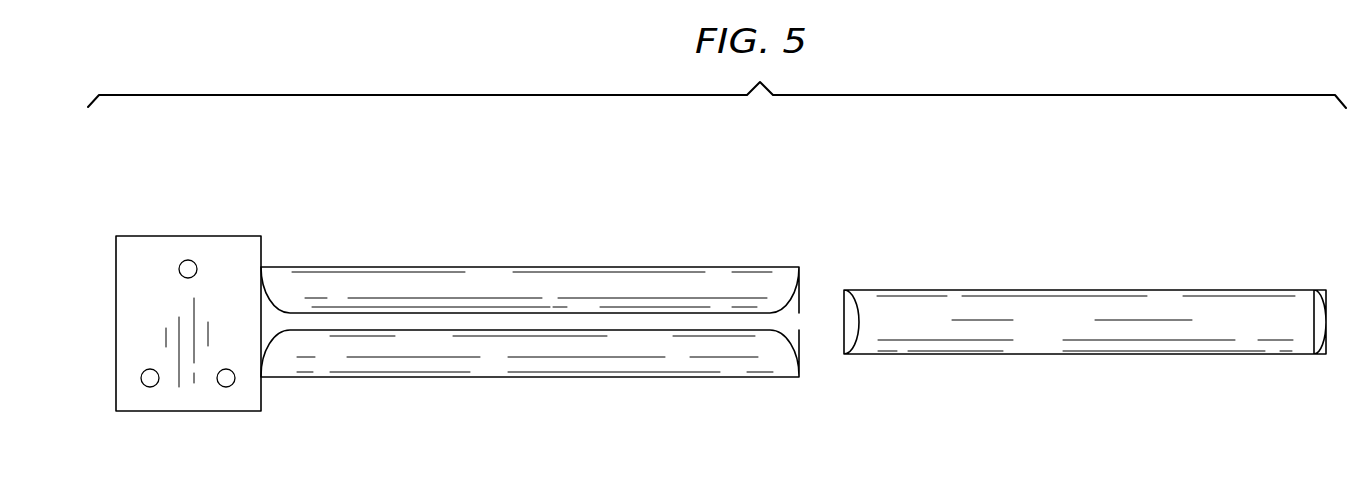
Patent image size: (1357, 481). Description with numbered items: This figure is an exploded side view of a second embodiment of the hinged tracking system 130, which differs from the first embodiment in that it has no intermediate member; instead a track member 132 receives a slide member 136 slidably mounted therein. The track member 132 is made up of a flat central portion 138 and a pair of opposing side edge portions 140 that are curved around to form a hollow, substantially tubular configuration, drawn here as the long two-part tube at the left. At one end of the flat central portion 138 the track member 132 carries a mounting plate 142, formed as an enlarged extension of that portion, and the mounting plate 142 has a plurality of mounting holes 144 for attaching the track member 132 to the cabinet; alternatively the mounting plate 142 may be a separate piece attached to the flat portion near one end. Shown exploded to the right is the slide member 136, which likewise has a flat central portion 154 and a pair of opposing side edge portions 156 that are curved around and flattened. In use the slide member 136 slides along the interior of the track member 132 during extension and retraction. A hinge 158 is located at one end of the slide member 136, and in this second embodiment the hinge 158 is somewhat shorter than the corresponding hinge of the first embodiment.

The hinged tracking system 130 is at (841, 258).
The track member 132 is at (487, 293).
The slide member 136 is at (1172, 307).
The flat central portion 138 is at (495, 320).
The side edge portions 140 is at (357, 265).
The mounting plate 142 is at (217, 402).
The mounting holes 144 is at (153, 381).
The flat central portion 154 is at (1043, 330).
The side edge portions 156 is at (930, 290).
The hinge 158 is at (1323, 358).